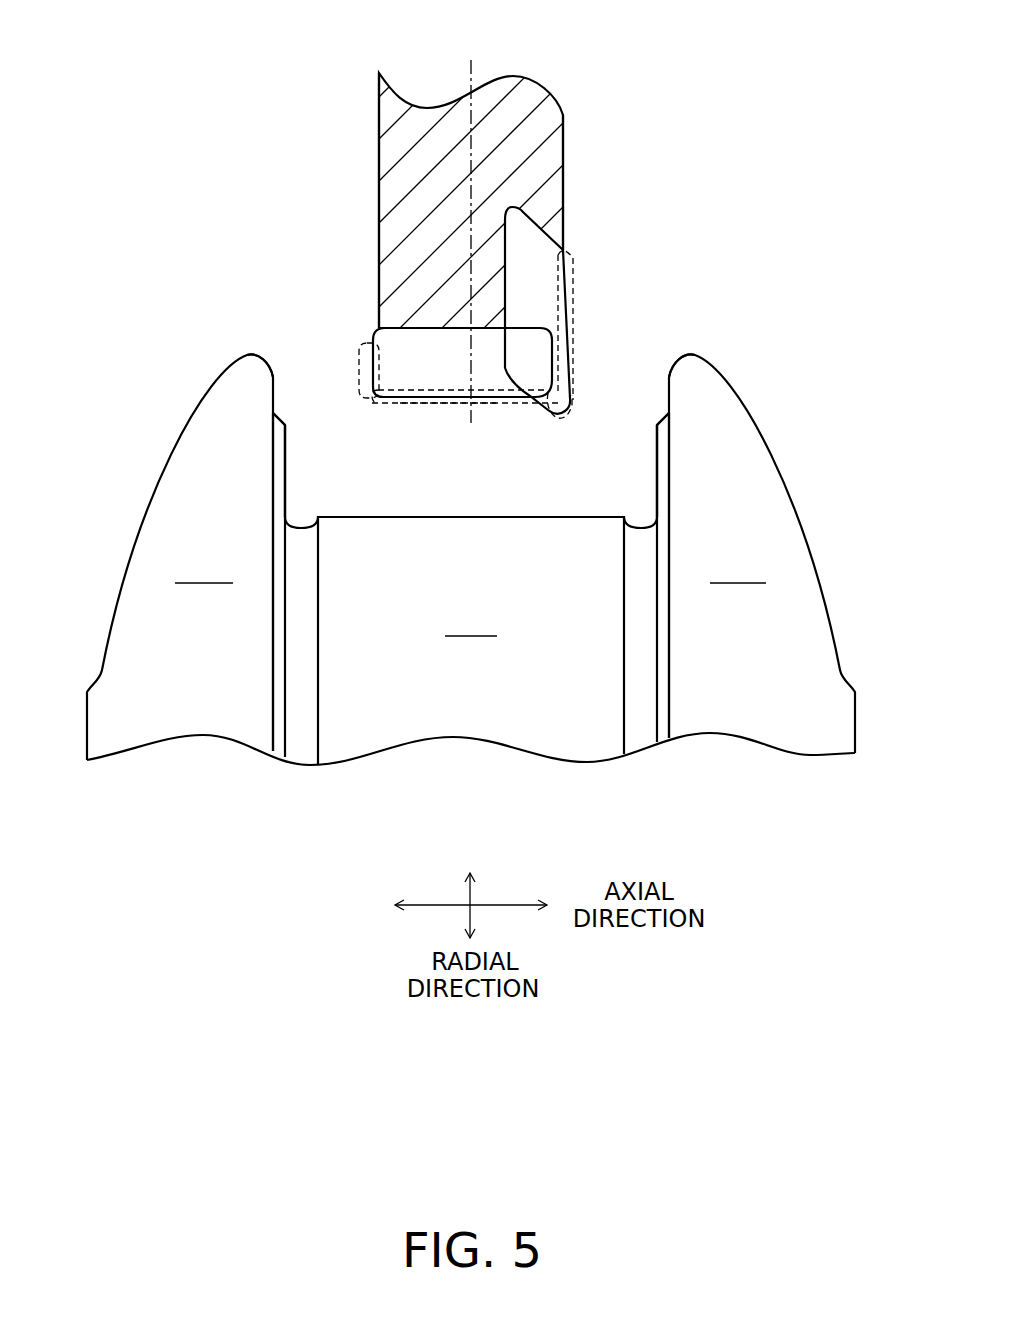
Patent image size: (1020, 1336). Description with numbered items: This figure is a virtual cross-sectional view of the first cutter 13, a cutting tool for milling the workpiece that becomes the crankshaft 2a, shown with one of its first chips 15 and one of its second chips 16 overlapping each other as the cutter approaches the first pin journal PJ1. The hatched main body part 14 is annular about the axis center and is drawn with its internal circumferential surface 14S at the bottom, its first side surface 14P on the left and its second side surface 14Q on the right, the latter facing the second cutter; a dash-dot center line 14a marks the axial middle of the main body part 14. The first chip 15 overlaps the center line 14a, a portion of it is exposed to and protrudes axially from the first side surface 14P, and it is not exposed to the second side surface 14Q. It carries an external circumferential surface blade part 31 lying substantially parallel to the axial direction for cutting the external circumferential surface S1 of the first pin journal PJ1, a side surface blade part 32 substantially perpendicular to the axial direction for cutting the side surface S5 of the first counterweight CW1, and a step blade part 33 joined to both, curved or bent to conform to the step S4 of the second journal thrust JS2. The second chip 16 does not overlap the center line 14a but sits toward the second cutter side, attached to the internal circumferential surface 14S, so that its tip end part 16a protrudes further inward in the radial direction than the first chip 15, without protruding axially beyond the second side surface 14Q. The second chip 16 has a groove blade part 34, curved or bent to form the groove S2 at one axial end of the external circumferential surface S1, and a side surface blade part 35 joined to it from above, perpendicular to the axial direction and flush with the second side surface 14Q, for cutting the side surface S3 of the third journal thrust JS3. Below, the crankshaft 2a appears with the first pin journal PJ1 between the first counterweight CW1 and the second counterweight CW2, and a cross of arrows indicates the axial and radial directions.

The first cutter 13 is at (580, 68).
The main body part 14 is at (379, 114).
The center line 14a is at (468, 80).
The first side surface 14P is at (375, 150).
The second side surface 14Q is at (567, 163).
The internal circumferential surface 14S is at (450, 325).
The first chip 15 is at (402, 327).
The second chip 16 is at (543, 232).
The tip end part 16a is at (533, 404).
The crankshaft 2a is at (156, 393).
The external circumferential surface blade part 31 is at (430, 405).
The side surface blade part 32 is at (358, 360).
The step blade part 33 is at (368, 406).
The groove blade part 34 is at (556, 420).
The side surface blade part 35 is at (575, 283).
The external circumferential surface S1 is at (457, 514).
The groove S2 is at (301, 520).
The side surface S3 is at (291, 455).
The step S4 is at (284, 414).
The side surface S5 is at (276, 375).
The first counterweight CW1 is at (180, 557).
The second counterweight CW2 is at (762, 553).
The first pin journal PJ1 is at (471, 641).
The second journal thrust JS2 is at (278, 749).
The third journal thrust JS3 is at (663, 738).